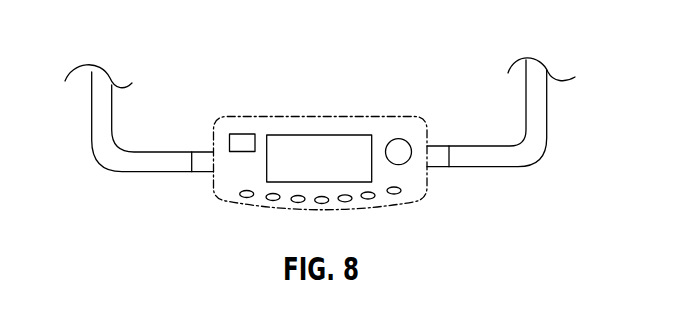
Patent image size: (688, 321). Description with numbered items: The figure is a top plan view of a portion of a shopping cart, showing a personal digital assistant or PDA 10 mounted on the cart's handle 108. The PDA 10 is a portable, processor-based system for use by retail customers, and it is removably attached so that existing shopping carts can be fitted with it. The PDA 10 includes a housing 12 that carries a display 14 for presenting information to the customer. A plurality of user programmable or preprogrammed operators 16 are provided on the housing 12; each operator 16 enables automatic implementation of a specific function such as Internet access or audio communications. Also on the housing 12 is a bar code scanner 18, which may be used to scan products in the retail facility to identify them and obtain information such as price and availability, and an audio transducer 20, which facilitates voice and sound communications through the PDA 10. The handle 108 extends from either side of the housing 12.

The personal digital assistant 10 is at (369, 86).
The housing 12 is at (417, 120).
The display 14 is at (317, 140).
The user programmable operators 16 is at (247, 196).
The bar code scanner 18 is at (237, 135).
The audio transducer 20 is at (400, 157).
The handle 108 is at (508, 154).